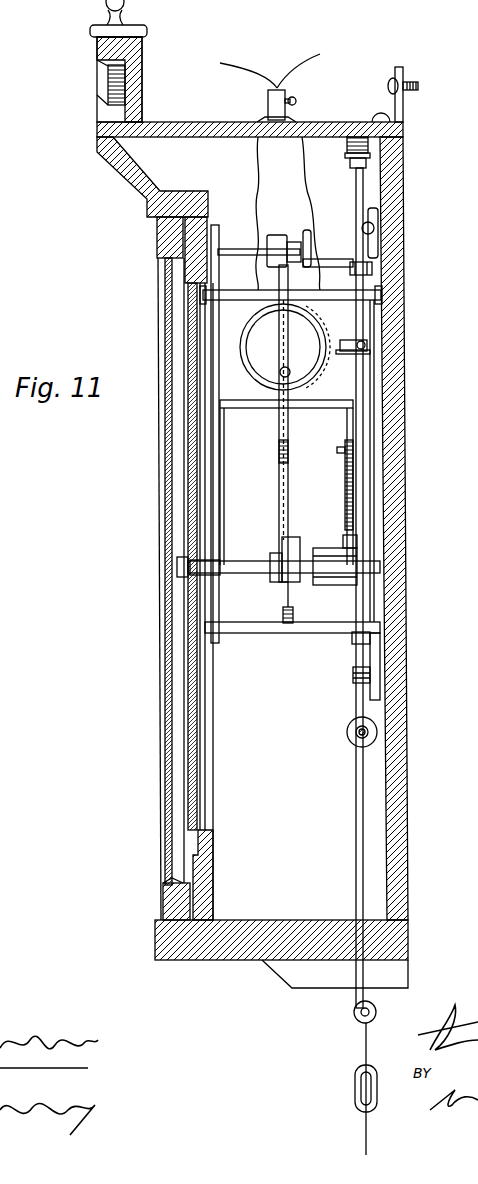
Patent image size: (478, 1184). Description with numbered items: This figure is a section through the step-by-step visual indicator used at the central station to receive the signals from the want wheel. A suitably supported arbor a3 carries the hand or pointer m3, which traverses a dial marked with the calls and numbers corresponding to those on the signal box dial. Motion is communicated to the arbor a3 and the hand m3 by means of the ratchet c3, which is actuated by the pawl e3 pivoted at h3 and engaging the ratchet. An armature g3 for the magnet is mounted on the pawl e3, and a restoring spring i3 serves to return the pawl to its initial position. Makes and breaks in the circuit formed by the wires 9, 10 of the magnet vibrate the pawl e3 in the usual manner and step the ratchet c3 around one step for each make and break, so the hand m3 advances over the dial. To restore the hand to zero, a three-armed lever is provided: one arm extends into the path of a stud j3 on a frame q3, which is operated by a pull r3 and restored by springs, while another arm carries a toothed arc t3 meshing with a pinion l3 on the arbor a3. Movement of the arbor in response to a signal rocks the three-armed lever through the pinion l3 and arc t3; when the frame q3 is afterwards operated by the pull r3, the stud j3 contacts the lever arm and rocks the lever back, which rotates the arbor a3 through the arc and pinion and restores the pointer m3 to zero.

The circuit wire 9 is at (262, 213).
The circuit wire 10 is at (309, 205).
The frame q3 is at (355, 660).
The pivot h3 is at (242, 252).
The stud j3 is at (345, 340).
The armature g3 is at (285, 347).
The restoring spring i3 is at (280, 370).
The pawl e3 is at (279, 452).
The toothed arc t3 is at (347, 522).
The pinion l3 is at (325, 556).
The arbor a3 is at (250, 561).
The ratchet c3 is at (283, 608).
The pull r3 is at (358, 838).
The hand m3 is at (195, 512).